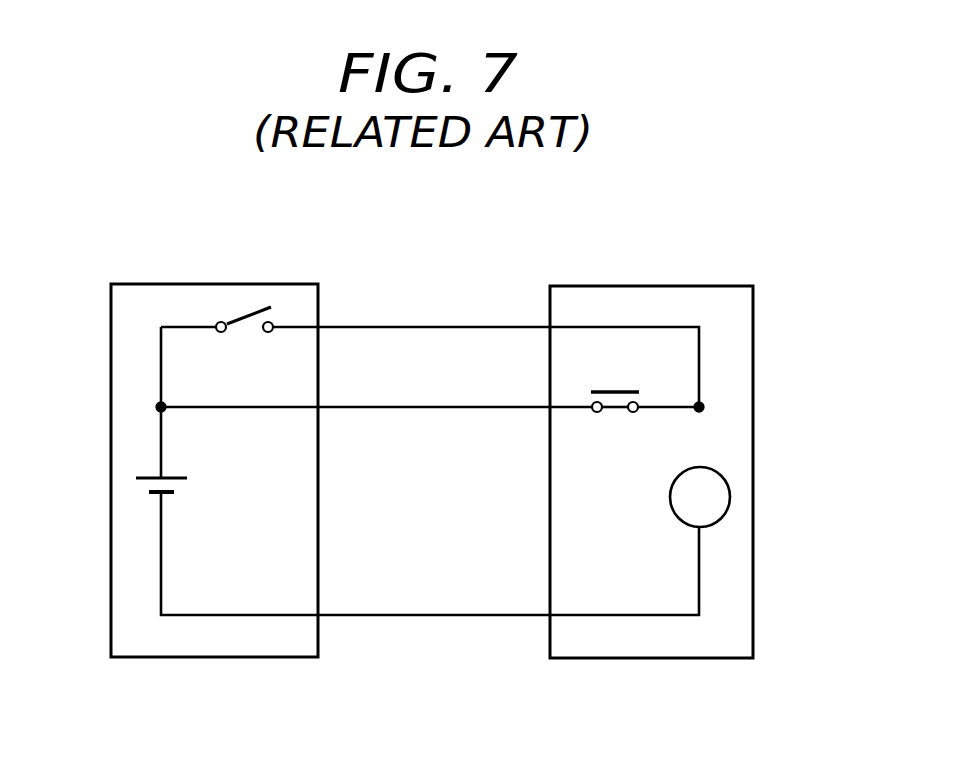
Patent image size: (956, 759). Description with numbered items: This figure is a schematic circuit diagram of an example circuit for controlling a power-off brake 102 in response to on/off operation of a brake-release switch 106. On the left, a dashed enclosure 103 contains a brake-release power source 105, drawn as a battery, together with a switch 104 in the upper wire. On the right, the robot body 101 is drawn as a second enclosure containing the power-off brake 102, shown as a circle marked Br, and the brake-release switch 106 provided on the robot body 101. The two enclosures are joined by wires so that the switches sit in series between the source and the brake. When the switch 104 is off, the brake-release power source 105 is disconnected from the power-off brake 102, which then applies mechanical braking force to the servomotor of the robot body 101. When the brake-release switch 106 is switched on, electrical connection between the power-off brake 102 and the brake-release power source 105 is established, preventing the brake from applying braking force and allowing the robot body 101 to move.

The robot body 101 is at (652, 286).
The power-off brake 102 is at (731, 497).
The power supply unit 103 is at (168, 284).
The switch 104 is at (238, 318).
The brake-release power source 105 is at (137, 490).
The brake-release switch 106 is at (617, 386).